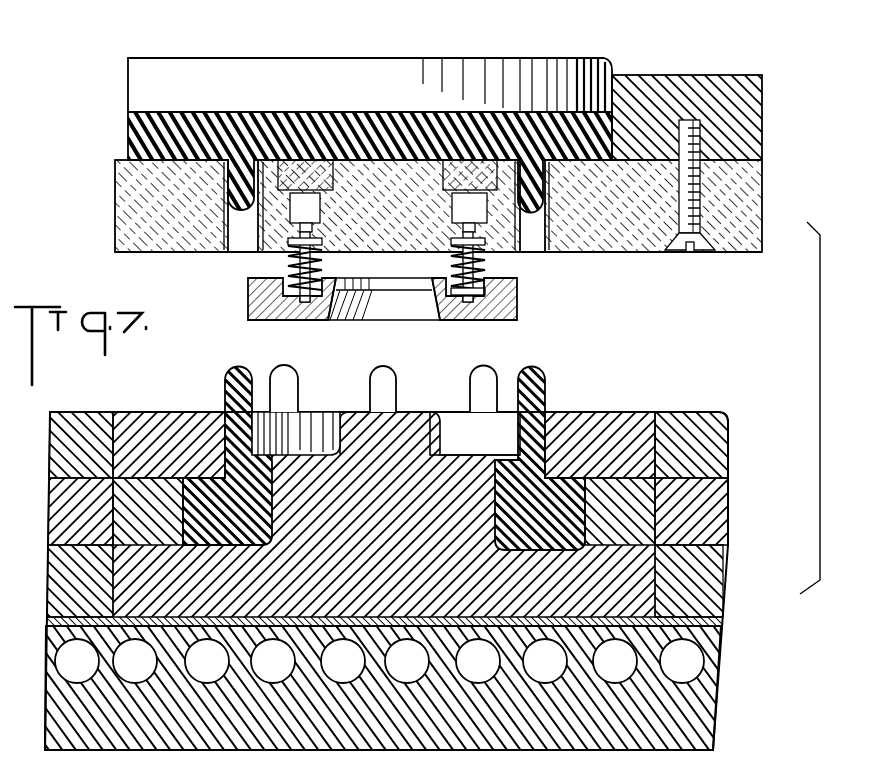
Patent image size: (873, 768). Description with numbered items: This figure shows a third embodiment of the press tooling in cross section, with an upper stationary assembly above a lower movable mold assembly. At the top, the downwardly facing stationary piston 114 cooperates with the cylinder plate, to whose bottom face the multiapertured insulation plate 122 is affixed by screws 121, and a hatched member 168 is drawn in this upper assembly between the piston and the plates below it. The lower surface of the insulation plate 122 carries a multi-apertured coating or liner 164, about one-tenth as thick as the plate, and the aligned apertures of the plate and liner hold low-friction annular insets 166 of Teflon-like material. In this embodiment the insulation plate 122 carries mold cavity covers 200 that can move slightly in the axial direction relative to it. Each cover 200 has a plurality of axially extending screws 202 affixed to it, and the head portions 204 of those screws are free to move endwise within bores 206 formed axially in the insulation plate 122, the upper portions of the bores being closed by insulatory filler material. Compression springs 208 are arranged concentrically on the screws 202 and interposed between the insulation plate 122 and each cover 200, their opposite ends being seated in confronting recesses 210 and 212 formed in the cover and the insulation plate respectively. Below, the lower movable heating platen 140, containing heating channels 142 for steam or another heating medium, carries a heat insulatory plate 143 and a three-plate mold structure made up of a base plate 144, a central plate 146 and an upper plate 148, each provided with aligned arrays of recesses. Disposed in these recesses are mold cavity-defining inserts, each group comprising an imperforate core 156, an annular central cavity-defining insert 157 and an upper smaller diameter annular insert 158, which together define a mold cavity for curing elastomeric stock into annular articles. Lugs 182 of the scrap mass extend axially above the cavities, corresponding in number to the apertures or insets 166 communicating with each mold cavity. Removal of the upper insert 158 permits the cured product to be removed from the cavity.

The stationary piston 114 is at (600, 44).
The upper hatched member 168 is at (143, 134).
The low-friction annular insets 166 is at (228, 213).
The multi-apertured coating or liner 164 is at (118, 253).
The bores 206 is at (457, 205).
The head portions 204 is at (452, 229).
The recess 212 is at (288, 258).
The recess 210 is at (290, 272).
The compression springs 208 is at (478, 262).
The mold cavity covers 200 is at (520, 300).
The screws 202 is at (306, 300).
The screws 121 is at (700, 206).
The multiapertured insulation plate 122 is at (755, 241).
The lugs 182 is at (372, 376).
The imperforate core 156 is at (404, 412).
The upper smaller diameter annular insert 158 is at (613, 432).
The annular central cavity-defining insert 157 is at (602, 497).
The upper plate 148 is at (712, 456).
The central plate 146 is at (705, 512).
The base plate 144 is at (710, 587).
The heat insulatory plate 143 is at (715, 622).
The heating channels 142 is at (700, 656).
The lower movable heating platen 140 is at (700, 724).